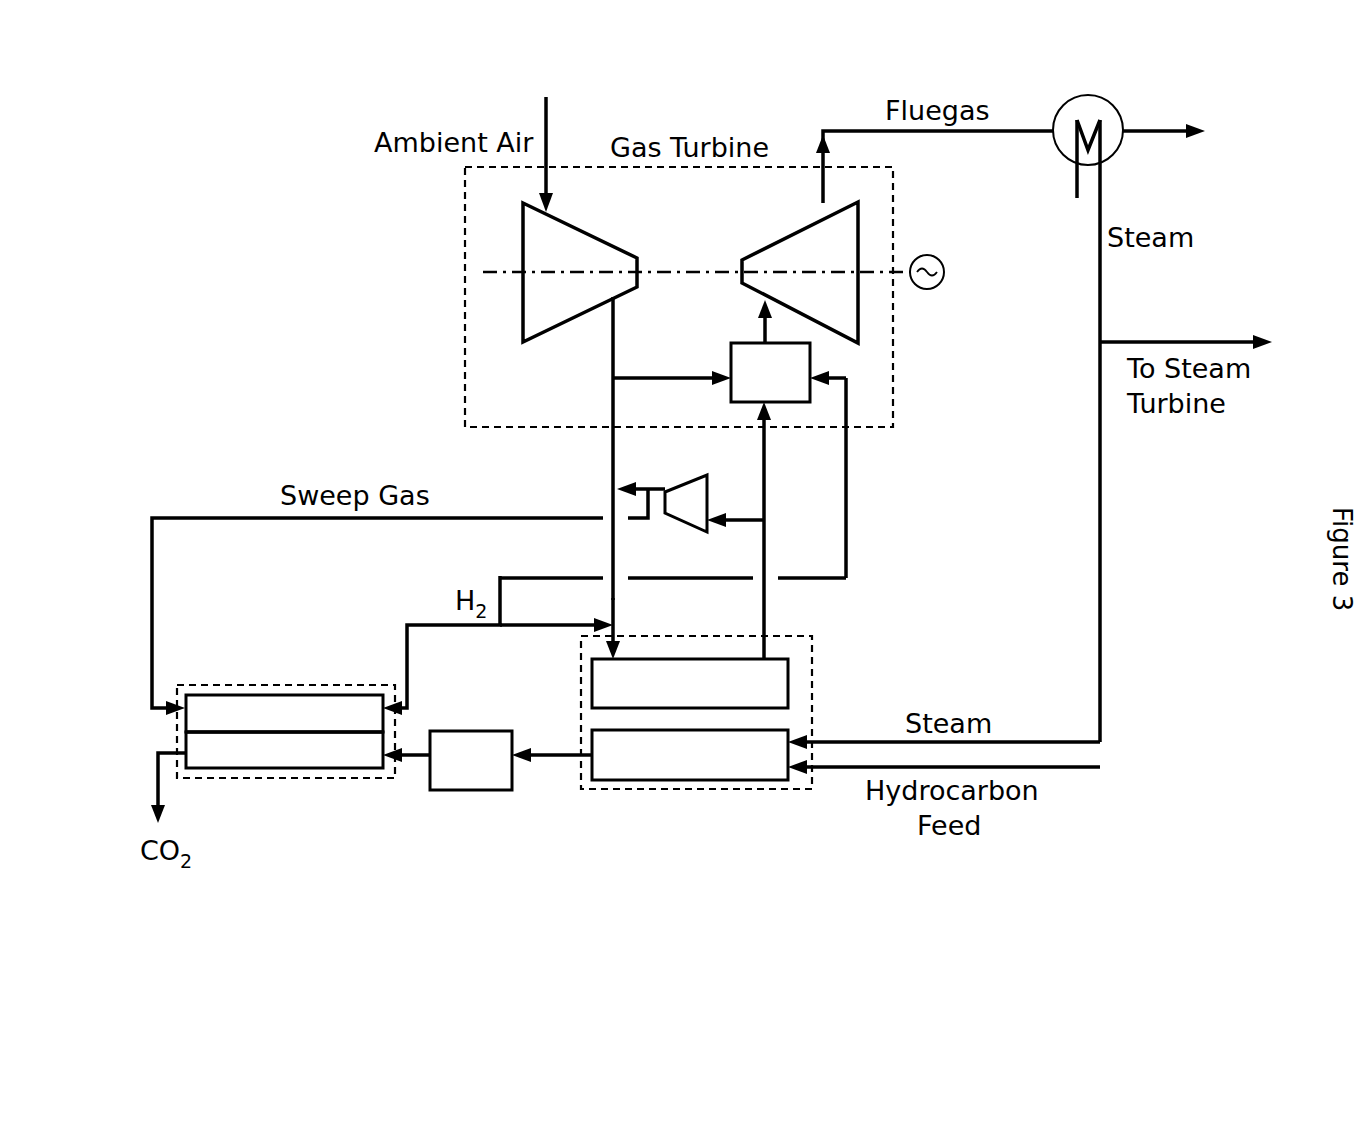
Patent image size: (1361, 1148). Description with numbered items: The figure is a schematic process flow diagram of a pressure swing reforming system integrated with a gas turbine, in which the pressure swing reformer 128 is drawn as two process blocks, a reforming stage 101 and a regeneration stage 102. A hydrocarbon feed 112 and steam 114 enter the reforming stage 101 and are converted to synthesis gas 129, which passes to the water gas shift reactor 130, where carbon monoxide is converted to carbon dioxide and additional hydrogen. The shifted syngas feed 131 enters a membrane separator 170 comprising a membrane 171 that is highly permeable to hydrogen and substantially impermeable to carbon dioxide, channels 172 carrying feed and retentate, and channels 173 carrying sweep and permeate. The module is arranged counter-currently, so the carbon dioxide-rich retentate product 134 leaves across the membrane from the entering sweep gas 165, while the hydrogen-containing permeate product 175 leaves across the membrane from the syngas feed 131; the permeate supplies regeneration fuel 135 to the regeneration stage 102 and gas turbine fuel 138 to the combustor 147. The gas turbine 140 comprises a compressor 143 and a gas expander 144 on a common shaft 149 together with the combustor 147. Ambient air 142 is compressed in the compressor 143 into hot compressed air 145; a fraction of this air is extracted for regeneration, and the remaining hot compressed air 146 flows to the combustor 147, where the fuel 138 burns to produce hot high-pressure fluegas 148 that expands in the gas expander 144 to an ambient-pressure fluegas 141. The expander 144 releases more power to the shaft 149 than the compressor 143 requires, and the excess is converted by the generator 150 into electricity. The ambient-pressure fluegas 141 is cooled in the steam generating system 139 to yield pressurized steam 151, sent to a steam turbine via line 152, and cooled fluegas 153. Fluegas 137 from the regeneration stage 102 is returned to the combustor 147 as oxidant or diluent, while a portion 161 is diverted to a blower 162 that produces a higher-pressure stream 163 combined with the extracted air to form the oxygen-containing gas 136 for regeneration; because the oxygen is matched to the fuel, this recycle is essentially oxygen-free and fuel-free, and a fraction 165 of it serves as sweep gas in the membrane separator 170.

The reforming stage 101 is at (793, 733).
The regeneration stage 102 is at (792, 692).
The hydrocarbon feed 112 is at (1068, 768).
The steam 114 is at (1102, 712).
The pressure swing reformer 128 is at (697, 790).
The synthesis gas 129 is at (542, 763).
The water gas shift reactor 130 is at (490, 790).
The syngas feed 131 is at (407, 750).
The retentate product 134 is at (143, 800).
The regeneration fuel 135 is at (570, 627).
The oxygen-containing gas 136 is at (613, 603).
The regeneration fluegas 137 is at (764, 630).
The gas turbine fuel 138 is at (847, 430).
The steam generating system 139 is at (1113, 158).
The gas turbine 140 is at (893, 345).
The ambient-pressure fluegas 141 is at (917, 133).
The ambient air 142 is at (548, 152).
The compressor 143 is at (518, 334).
The gas expander 144 is at (780, 243).
The hot compressed air 145 is at (612, 332).
The hot compressed air to combustor 146 is at (632, 375).
The combustor 147 is at (770, 372).
The high pressure fluegas 148 is at (762, 325).
The common shaft 149 is at (692, 272).
The generator 150 is at (938, 285).
The pressurized steam 151 is at (1097, 302).
The steam line to steam turbine 152 is at (1162, 340).
The cooled fluegas 153 is at (1173, 135).
The diverted fluegas portion 161 is at (748, 522).
The blower 162 is at (707, 497).
The higher-pressure recycled fluegas 163 is at (678, 463).
The sweep gas 165 is at (276, 520).
The membrane separator 170 is at (222, 778).
The membrane 171 is at (258, 732).
The feed and retentate channels 172 is at (258, 753).
The sweep and permeate channels 173 is at (240, 708).
The permeate product 175 is at (433, 623).